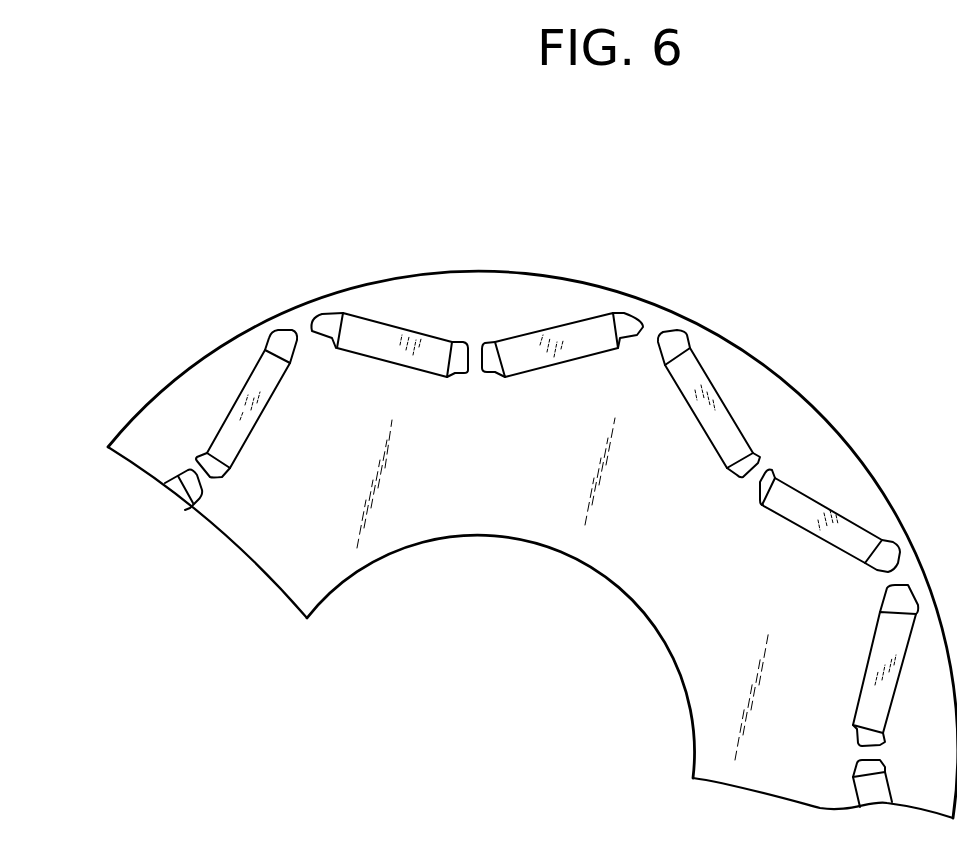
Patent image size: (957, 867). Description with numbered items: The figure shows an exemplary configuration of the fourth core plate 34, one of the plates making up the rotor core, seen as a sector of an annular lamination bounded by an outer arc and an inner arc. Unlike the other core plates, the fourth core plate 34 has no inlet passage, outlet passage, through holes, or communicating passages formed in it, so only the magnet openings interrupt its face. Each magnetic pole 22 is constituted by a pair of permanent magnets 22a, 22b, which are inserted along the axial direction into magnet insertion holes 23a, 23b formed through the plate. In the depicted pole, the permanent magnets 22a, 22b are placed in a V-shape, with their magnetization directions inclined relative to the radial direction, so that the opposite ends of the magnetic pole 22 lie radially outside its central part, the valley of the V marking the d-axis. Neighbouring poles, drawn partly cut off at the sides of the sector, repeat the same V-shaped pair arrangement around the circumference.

The magnetic pole 22 is at (547, 193).
The permanent magnet 22a is at (385, 337).
The permanent magnet 22b is at (567, 337).
The magnet insertion hole 23a is at (332, 323).
The magnet insertion hole 23b is at (628, 323).
The fourth core plate 34 is at (178, 407).